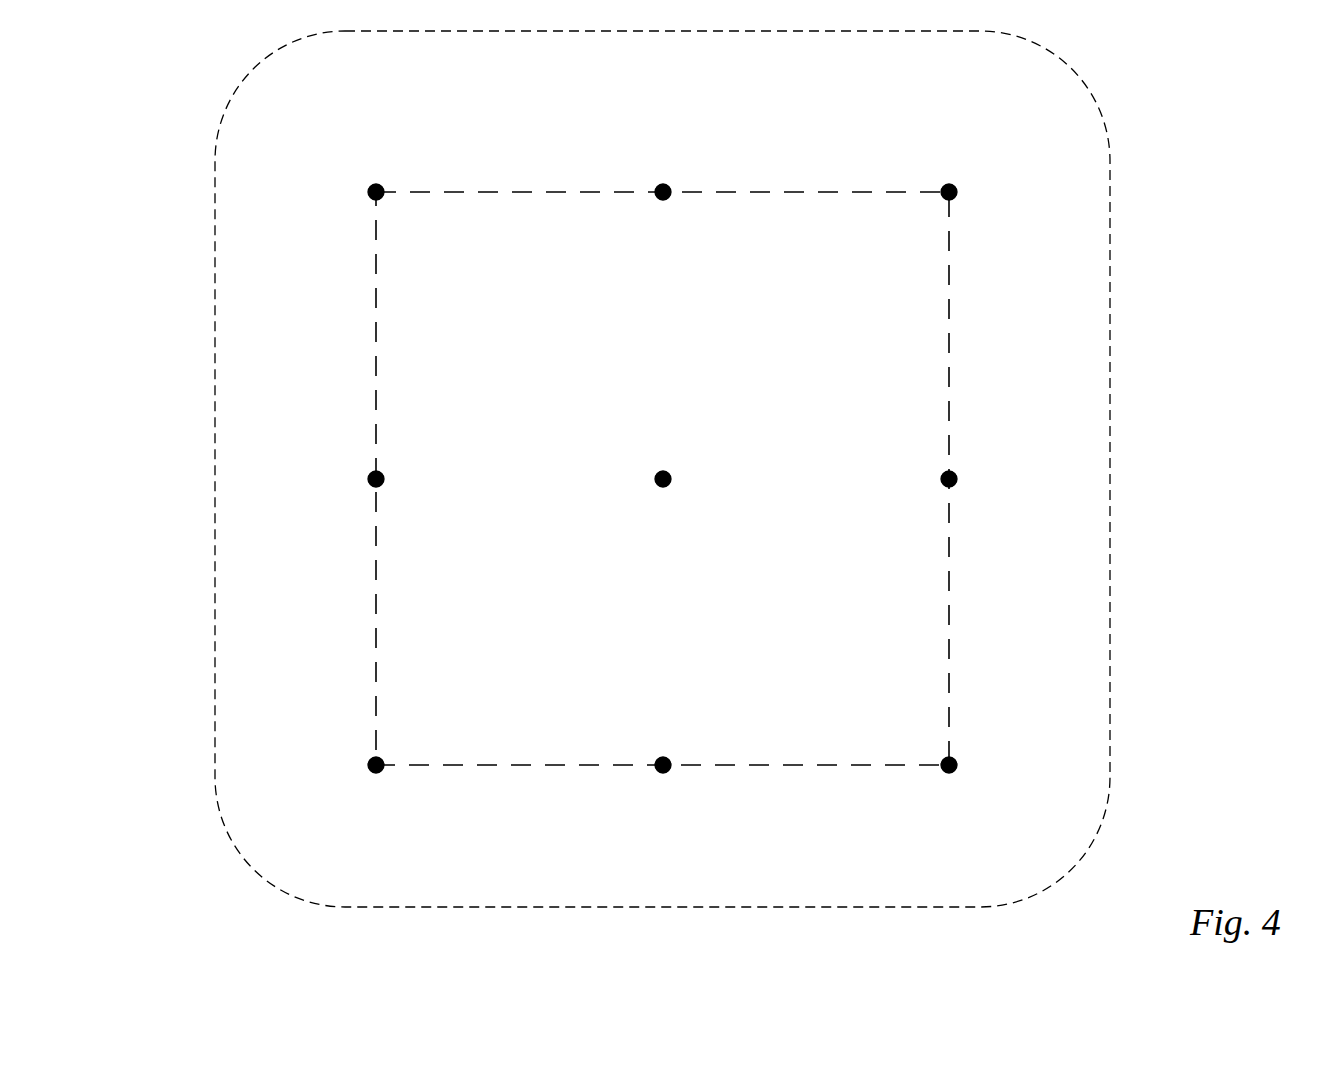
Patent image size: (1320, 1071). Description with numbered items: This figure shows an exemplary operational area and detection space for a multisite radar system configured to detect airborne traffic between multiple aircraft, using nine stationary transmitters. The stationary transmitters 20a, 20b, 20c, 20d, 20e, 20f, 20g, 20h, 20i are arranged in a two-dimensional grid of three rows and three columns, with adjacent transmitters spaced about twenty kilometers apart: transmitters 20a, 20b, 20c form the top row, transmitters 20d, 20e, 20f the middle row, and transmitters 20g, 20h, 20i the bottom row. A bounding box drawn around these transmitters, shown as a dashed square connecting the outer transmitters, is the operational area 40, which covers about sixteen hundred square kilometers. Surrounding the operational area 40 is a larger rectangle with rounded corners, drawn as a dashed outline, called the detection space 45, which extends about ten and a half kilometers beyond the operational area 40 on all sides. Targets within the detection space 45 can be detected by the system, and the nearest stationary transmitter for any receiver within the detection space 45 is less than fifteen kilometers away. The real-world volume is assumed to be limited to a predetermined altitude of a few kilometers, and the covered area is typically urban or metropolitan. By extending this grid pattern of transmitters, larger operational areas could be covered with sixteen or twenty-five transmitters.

The detection space 45 is at (662, 469).
The operational area 40 is at (662, 452).
The stationary transmitter 20a is at (394, 204).
The stationary transmitter 20b is at (676, 204).
The stationary transmitter 20c is at (968, 204).
The stationary transmitter 20d is at (394, 491).
The stationary transmitter 20e is at (680, 491).
The stationary transmitter 20f is at (967, 491).
The stationary transmitter 20g is at (394, 777).
The stationary transmitter 20h is at (680, 777).
The stationary transmitter 20i is at (966, 777).